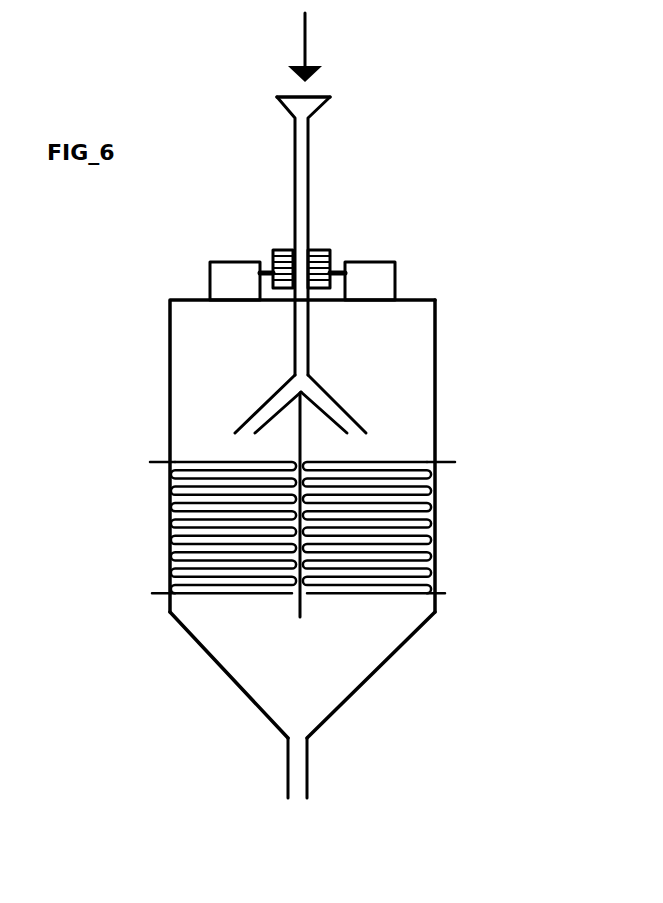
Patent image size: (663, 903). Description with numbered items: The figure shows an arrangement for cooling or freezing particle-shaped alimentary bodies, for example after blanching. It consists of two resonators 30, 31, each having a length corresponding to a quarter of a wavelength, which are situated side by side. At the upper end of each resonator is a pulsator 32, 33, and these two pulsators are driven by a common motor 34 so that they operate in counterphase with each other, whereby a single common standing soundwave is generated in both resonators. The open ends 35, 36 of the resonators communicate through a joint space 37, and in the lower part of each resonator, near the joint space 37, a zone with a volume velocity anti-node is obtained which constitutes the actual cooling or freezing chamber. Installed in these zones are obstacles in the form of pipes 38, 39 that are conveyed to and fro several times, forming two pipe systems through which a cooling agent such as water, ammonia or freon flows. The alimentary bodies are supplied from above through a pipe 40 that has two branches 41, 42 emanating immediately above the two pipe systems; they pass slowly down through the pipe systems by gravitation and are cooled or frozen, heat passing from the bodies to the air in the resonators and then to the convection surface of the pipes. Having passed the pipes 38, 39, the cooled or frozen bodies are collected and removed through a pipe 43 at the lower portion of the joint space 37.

The resonator 30 is at (200, 343).
The resonator 31 is at (410, 345).
The pulsator 32 is at (225, 278).
The pulsator 33 is at (375, 275).
The common motor 34 is at (327, 250).
The open end 35 is at (230, 612).
The open end 36 is at (373, 609).
The joint space 37 is at (297, 685).
The pipes 38 is at (210, 525).
The pipes 39 is at (400, 535).
The pipe 40 is at (315, 100).
The branch 41 is at (235, 428).
The branch 42 is at (350, 428).
The pipe 43 is at (296, 783).